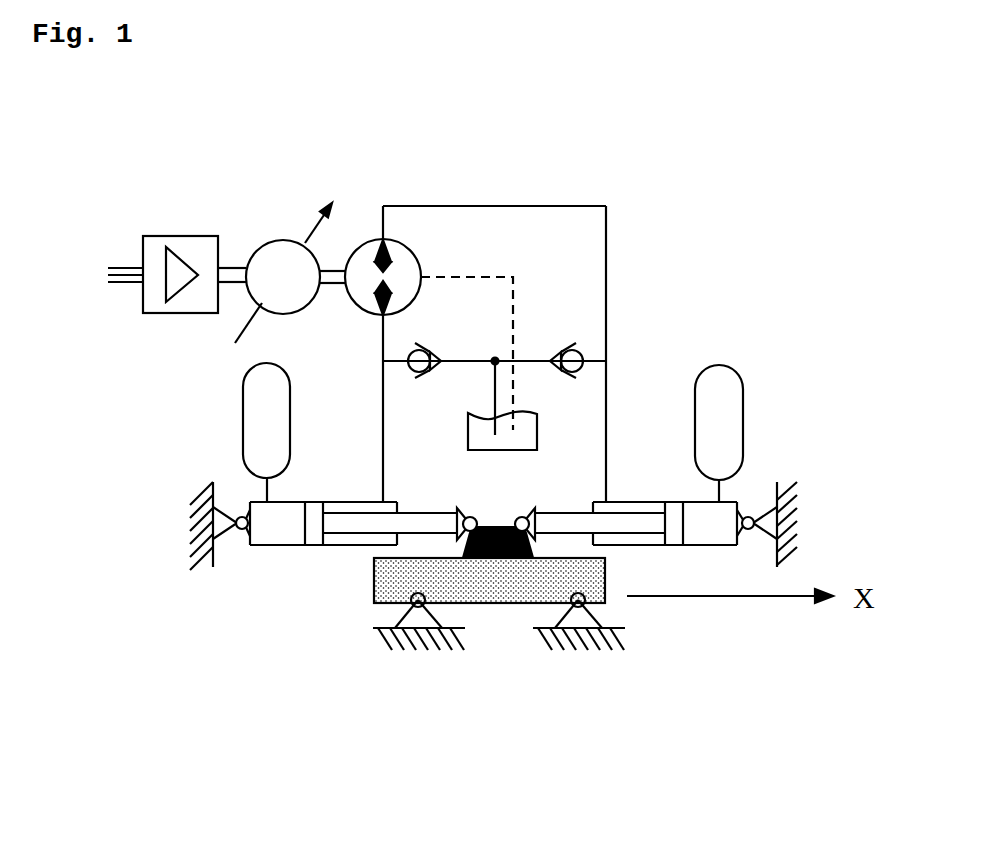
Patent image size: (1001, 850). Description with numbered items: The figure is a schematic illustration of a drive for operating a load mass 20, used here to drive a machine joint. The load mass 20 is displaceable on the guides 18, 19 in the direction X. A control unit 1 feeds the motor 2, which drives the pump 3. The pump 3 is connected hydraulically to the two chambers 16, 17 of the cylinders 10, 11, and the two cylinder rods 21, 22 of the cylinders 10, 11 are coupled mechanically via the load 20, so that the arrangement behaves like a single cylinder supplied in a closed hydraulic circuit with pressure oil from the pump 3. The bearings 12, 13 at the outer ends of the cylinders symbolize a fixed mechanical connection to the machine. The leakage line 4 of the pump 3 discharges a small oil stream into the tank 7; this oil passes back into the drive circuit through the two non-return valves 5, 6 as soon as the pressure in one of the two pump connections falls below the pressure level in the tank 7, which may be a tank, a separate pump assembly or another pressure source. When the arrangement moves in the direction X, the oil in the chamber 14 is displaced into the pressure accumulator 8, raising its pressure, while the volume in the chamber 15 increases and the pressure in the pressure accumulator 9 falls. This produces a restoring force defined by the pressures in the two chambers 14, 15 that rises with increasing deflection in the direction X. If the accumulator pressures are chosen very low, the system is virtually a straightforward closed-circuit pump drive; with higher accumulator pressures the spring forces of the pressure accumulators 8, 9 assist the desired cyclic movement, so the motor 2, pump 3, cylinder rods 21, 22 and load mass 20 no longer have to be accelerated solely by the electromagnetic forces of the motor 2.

The control amplifier 1 is at (152, 248).
The motor 2 is at (282, 250).
The pump 3 is at (363, 265).
The leakage line 4 is at (470, 277).
The non-return valve 5 is at (573, 354).
The non-return valve 6 is at (408, 353).
The tank 7 is at (530, 425).
The pressure accumulator 8 is at (722, 397).
The pressure accumulator 9 is at (257, 413).
The cylinder 10 is at (735, 502).
The cylinder 11 is at (253, 502).
The bearing 12 is at (797, 507).
The bearing 13 is at (222, 518).
The chamber 14 is at (715, 533).
The chamber 15 is at (278, 530).
The chamber 16 is at (613, 540).
The chamber 17 is at (368, 540).
The guide 18 is at (580, 618).
The guide 19 is at (410, 618).
The load mass 20 is at (467, 590).
The cylinder rod 21 is at (348, 530).
The cylinder rod 22 is at (640, 527).